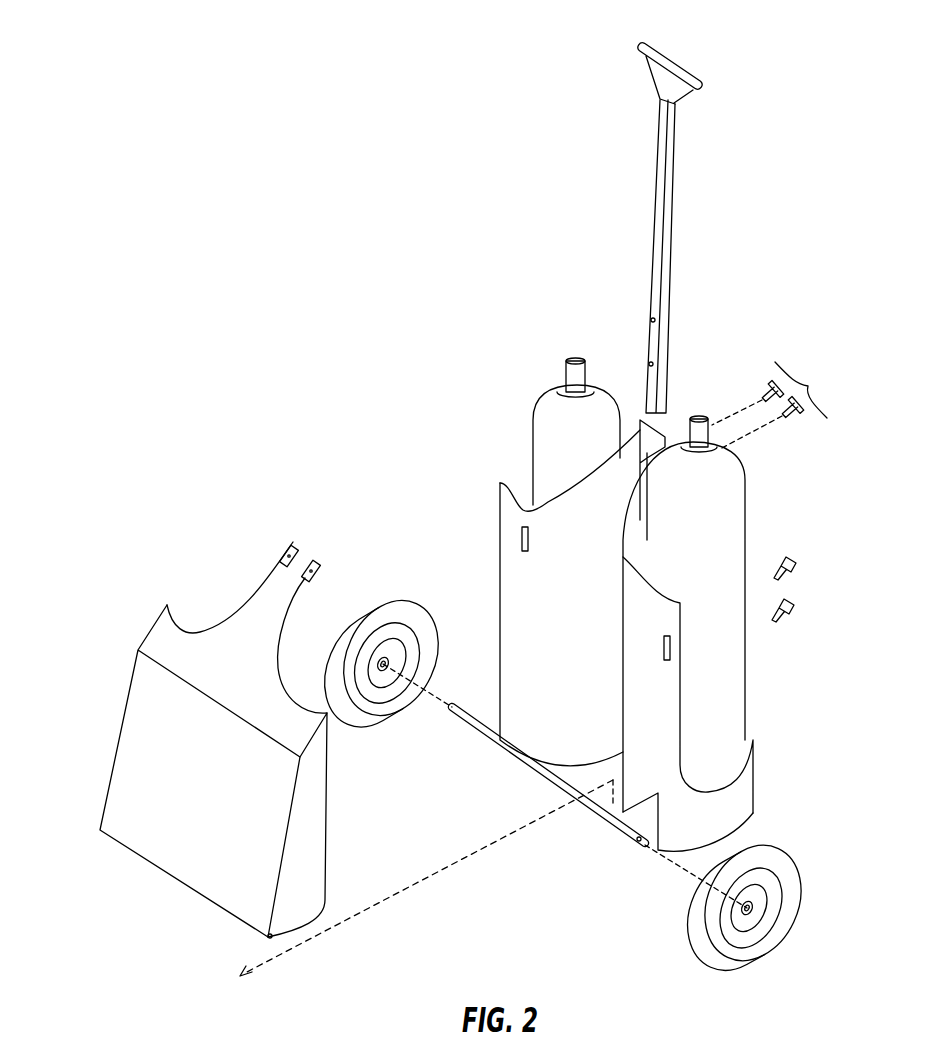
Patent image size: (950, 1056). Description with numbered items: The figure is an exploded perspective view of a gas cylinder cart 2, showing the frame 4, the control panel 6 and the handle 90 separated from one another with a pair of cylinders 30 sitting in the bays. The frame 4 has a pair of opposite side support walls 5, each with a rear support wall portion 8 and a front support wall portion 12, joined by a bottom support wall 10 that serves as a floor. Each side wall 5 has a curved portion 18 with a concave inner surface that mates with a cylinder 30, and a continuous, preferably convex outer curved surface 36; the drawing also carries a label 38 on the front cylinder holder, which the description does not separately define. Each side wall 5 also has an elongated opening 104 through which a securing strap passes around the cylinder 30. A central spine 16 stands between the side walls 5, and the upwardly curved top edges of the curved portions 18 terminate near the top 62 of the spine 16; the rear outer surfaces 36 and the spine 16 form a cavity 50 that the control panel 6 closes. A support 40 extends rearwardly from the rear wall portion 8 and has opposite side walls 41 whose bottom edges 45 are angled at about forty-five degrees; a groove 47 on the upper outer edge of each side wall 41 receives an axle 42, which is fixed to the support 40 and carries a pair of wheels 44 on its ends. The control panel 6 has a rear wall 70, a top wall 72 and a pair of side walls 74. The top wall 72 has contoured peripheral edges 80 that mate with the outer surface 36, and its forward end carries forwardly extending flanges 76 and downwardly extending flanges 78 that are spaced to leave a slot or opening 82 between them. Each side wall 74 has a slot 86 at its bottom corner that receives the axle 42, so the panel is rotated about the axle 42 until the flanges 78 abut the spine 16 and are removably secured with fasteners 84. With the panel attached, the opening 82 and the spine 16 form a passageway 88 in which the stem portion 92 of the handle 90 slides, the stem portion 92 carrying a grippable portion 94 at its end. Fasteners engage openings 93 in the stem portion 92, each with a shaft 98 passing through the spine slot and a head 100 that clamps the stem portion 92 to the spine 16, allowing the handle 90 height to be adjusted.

The gas cylinder cart 2 is at (803, 243).
The frame 4 is at (753, 810).
The side support wall 5 is at (500, 570).
The control panel 6 is at (108, 790).
The rear support wall portion 8 is at (500, 598).
The bottom support wall 10 is at (590, 785).
The front support wall portion 12 is at (742, 785).
The central spine 16 is at (643, 460).
The curved portion 18 is at (520, 510).
The gas cylinder 30 is at (545, 460).
The outer curved surface 36 is at (500, 628).
The second tank holder 38 is at (675, 717).
The support 40 is at (458, 755).
The side wall of support 41 is at (487, 713).
The axle 42 is at (560, 787).
The wheel 44 is at (397, 600).
The bottom edge 45 is at (520, 770).
The groove 47 is at (620, 833).
The cavity 50 is at (612, 728).
The top of spine 62 is at (642, 432).
The rear wall 70 is at (215, 900).
The top wall 72 is at (160, 630).
The side wall of control panel 74 is at (323, 852).
The forwardly extending flange 76 is at (283, 558).
The downwardly extending flange 78 is at (322, 575).
The peripheral edge 80 is at (285, 640).
The slot or opening 82 is at (302, 552).
The fastener 84 is at (640, 422).
The slot 86 is at (100, 830).
The passageway 88 is at (663, 435).
The handle 90 is at (650, 208).
The stem portion 92 is at (672, 166).
The opening 93 is at (654, 362).
The grippable portion 94 is at (675, 56).
The shaft 98 is at (780, 562).
The head 100 is at (795, 572).
The opening 104 is at (520, 540).